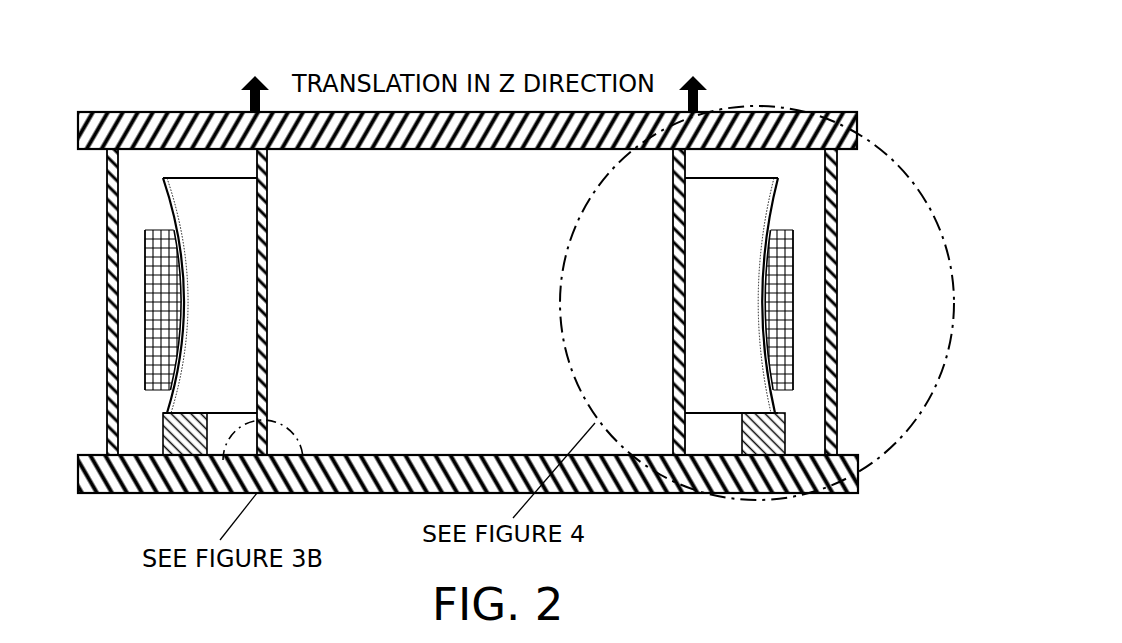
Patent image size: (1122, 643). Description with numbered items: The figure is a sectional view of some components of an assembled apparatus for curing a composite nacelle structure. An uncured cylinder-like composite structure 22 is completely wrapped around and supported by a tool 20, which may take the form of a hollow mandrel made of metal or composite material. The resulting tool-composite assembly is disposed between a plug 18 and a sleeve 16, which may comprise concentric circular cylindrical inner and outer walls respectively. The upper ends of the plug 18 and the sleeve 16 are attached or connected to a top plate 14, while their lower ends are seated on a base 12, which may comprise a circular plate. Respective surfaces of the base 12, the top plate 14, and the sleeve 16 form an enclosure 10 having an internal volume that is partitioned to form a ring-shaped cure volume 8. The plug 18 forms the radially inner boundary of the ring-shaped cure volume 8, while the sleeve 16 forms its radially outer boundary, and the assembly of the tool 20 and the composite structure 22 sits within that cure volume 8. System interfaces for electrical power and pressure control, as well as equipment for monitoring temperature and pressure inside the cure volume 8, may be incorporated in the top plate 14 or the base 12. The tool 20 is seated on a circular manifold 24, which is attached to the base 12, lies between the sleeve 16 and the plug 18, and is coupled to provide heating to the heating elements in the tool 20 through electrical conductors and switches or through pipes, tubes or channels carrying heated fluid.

The ring-shaped cure volume 8 is at (812, 422).
The enclosure 10 is at (728, 102).
The base 12 is at (843, 485).
The top plate 14 is at (782, 108).
The sleeve 16 is at (108, 325).
The plug 18 is at (267, 253).
The tool 20 is at (170, 205).
The composite structure 22 is at (150, 285).
The manifold 24 is at (165, 437).